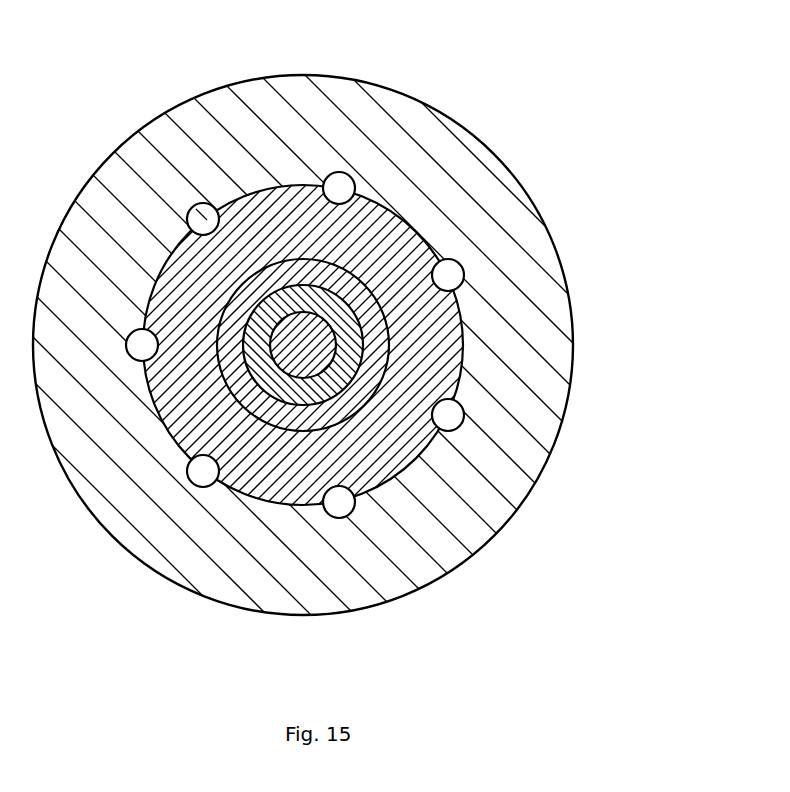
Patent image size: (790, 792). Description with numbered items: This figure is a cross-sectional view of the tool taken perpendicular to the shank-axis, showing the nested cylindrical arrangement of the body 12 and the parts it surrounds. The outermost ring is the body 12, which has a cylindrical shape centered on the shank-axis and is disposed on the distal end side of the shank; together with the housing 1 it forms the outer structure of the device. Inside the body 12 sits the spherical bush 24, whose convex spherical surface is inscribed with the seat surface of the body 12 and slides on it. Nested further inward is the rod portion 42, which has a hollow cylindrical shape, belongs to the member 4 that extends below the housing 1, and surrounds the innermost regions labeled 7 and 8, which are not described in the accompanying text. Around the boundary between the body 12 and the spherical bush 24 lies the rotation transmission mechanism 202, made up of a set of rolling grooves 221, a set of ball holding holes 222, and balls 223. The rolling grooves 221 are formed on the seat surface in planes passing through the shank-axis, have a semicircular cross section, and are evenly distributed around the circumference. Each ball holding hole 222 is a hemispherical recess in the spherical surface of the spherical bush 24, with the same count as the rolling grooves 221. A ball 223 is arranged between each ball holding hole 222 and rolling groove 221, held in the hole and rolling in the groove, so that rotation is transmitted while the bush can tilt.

The rotation transmission mechanism 202 is at (194, 117).
The ball holding hole 222 is at (192, 133).
The ball 223 is at (203, 203).
The rolling groove 221 is at (220, 133).
The core 8 is at (303, 330).
The inner layer 7 is at (340, 317).
The rod portion 42 is at (426, 344).
The intermediate member 4 is at (380, 343).
The spherical bush 24 is at (402, 433).
The body 12 is at (303, 376).
The housing 1 is at (287, 613).